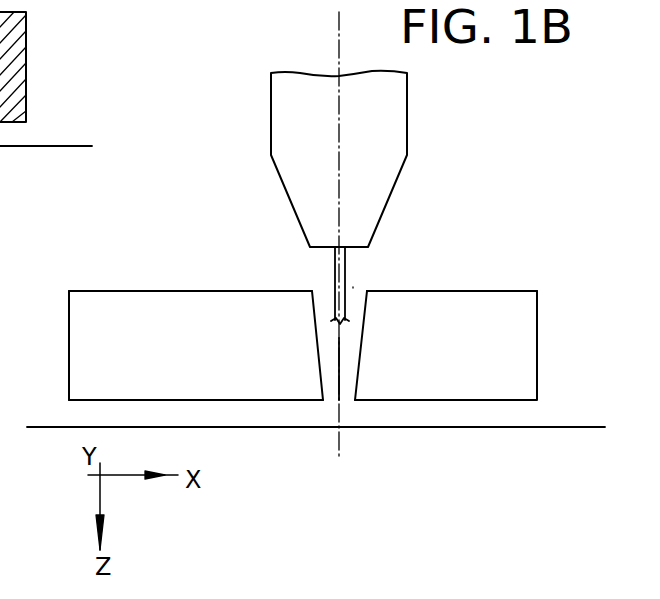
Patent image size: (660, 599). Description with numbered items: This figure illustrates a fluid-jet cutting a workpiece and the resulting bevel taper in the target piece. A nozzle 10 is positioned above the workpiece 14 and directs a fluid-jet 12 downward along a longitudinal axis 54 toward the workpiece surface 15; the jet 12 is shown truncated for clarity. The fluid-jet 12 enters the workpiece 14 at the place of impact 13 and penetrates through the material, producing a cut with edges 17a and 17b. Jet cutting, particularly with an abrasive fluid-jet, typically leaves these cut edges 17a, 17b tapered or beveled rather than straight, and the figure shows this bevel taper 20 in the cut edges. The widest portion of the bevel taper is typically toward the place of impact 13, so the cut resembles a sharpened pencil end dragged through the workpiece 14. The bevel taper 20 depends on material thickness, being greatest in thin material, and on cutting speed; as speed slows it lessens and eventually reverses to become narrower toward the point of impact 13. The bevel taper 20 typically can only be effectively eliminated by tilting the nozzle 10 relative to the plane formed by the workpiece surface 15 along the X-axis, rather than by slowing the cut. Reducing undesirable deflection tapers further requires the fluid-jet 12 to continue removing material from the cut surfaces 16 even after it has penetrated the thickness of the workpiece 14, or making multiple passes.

The nozzle 10 is at (271, 124).
The fluid-jet 12 is at (335, 268).
The place of impact 13 is at (353, 288).
The workpiece 14 is at (27, 66).
The workpiece surface 15 is at (452, 290).
The cut surfaces 16 is at (89, 314).
The cut edge 17a is at (312, 336).
The cut edge 17b is at (367, 333).
The bevel taper 20 is at (332, 372).
The longitudinal axis 54 is at (337, 40).